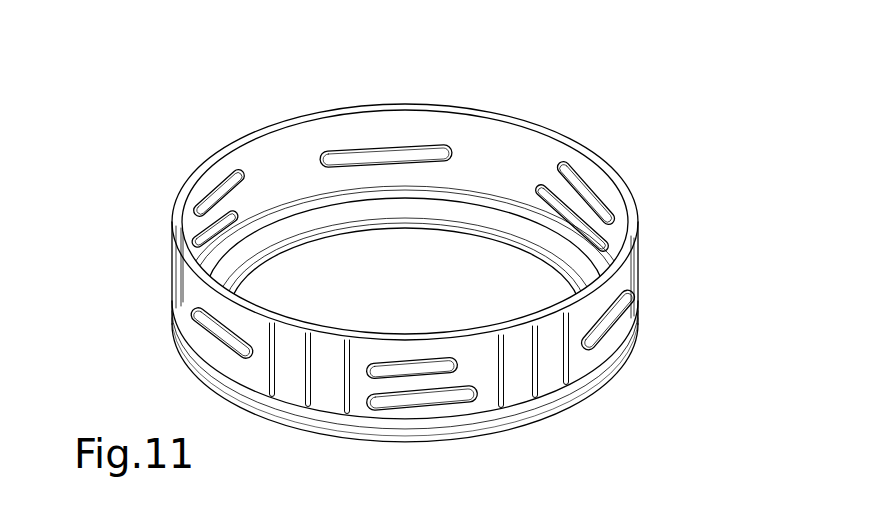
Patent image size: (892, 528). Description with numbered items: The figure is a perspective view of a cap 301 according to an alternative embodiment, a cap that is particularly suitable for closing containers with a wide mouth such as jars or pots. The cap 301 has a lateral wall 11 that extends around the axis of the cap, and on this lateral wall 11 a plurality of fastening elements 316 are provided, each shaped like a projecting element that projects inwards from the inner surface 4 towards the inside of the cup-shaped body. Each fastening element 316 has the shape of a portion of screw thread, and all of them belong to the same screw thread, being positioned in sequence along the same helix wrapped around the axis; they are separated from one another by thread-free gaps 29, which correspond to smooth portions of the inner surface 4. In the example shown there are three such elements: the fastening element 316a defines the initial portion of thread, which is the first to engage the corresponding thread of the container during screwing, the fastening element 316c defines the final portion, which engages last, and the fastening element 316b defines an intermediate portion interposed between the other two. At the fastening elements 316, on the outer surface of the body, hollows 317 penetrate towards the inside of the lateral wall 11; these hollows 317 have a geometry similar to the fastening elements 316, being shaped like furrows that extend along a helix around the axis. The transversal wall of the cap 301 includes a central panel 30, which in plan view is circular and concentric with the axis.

The cap 301 is at (610, 410).
The inner surface 4 is at (274, 178).
The lateral wall 11 is at (493, 148).
The thread-free gaps 29 is at (511, 181).
The central panel 30 is at (358, 291).
The fastening elements 316 is at (205, 240).
The fastening element 316a is at (224, 192).
The fastening element 316b is at (381, 158).
The fastening element 316c is at (564, 202).
The hollows 317 is at (412, 362).